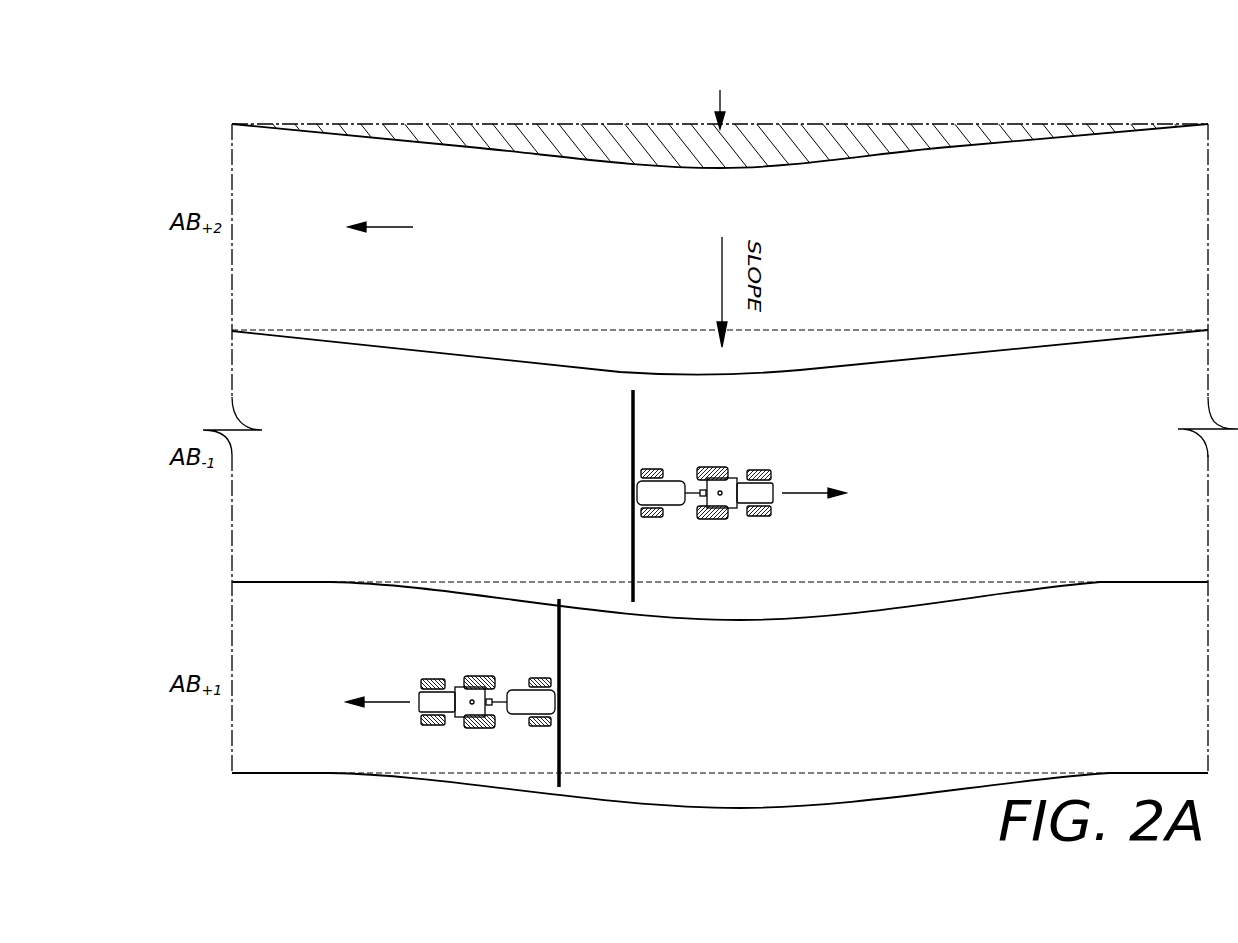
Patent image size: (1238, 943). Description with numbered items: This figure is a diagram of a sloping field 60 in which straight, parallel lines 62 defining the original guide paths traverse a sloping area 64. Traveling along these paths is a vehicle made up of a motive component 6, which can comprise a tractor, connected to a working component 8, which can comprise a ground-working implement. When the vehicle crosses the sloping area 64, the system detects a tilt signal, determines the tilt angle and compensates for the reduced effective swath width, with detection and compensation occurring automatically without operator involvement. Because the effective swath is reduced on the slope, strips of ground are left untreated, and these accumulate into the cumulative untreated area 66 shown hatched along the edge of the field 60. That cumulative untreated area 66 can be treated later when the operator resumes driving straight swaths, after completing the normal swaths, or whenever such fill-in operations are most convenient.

The sloping field 60 is at (346, 101).
The cumulative untreated area 66 is at (920, 124).
The sloping area 64 is at (659, 284).
The parallel lines 62 is at (885, 330).
The motive component 6 is at (770, 480).
The working component 8 is at (636, 495).